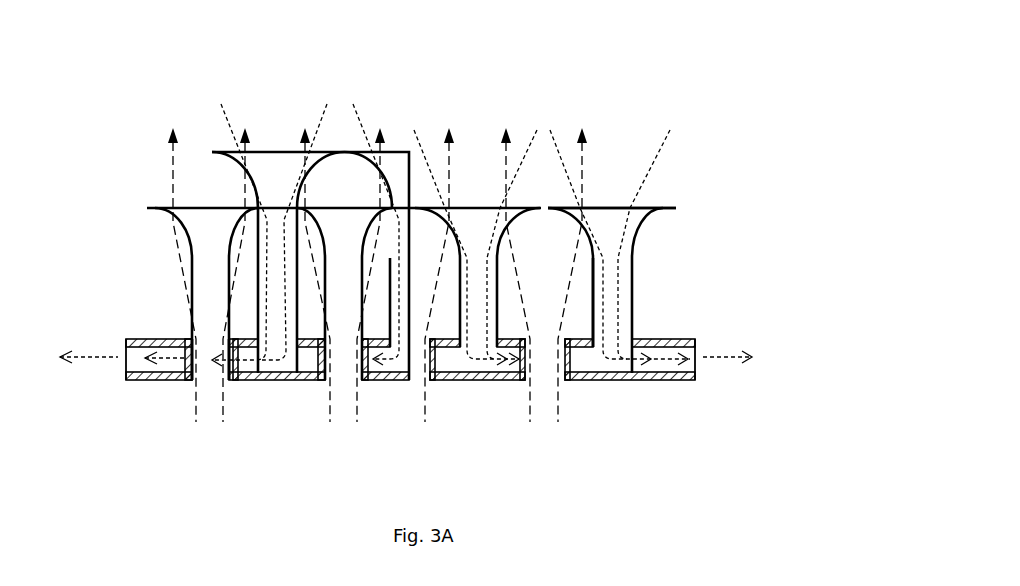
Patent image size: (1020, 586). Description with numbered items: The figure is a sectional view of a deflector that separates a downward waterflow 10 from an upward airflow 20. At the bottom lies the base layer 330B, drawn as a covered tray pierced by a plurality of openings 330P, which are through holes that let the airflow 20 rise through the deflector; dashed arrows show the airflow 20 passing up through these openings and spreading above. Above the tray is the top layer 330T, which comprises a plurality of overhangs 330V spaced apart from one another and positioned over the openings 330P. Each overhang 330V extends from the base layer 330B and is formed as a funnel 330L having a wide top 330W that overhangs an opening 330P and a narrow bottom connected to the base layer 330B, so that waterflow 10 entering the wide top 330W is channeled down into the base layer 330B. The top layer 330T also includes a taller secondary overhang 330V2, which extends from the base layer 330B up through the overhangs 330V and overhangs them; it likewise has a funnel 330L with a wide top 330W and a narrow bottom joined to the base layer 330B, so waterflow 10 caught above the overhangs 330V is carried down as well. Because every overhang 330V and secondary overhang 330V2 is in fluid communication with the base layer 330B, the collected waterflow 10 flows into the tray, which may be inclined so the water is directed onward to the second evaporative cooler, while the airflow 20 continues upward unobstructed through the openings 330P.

The waterflow 10 is at (224, 117).
The airflow 20 is at (170, 157).
The secondary overhang 330V2 is at (214, 152).
The wide top 330W is at (160, 208).
The base layer 330B is at (413, 386).
The opening 330P is at (197, 382).
The top layer 330T is at (688, 203).
The overhang 330V is at (693, 290).
The funnel 330L is at (633, 277).